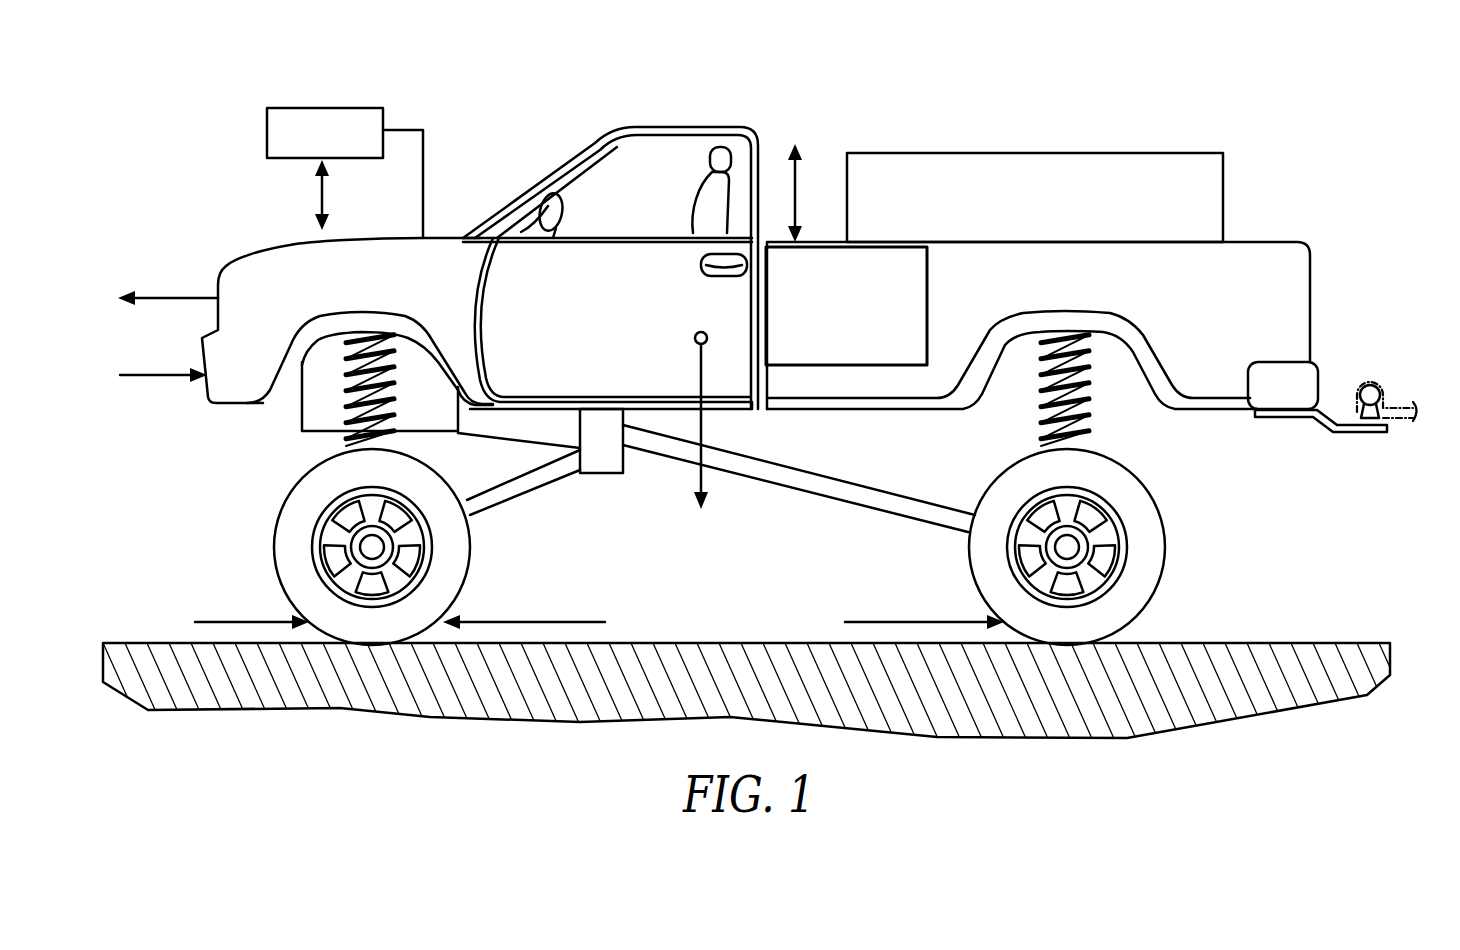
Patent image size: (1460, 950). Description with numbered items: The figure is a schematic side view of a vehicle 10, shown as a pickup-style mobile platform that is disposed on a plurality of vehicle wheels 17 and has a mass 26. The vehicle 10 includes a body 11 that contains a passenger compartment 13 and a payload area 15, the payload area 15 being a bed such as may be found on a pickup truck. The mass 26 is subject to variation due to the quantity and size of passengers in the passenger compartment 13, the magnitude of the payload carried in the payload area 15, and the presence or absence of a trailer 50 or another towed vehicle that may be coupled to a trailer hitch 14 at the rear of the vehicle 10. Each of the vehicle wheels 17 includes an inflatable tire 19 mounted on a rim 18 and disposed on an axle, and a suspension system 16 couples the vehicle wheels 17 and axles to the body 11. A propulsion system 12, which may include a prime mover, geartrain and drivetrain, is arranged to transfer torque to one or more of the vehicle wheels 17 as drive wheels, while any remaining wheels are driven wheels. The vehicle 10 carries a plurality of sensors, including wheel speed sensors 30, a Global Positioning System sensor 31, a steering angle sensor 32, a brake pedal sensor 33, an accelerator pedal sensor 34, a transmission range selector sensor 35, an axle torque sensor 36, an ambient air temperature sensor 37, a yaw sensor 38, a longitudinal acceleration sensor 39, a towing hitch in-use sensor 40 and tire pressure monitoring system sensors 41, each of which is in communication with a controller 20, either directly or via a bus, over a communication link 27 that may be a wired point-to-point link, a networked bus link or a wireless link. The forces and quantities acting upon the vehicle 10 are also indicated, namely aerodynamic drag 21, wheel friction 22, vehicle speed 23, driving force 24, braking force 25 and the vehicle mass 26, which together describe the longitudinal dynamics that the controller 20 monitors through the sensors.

The vehicle 10 is at (1015, 112).
The body 11 is at (520, 155).
The propulsion system 12 is at (296, 438).
The passenger compartment 13 is at (623, 182).
The trailer hitch 14 is at (1375, 384).
The payload area 15 is at (1225, 195).
The suspension system 16 is at (345, 375).
The vehicle wheels 17 is at (1110, 530).
The rim 18 is at (1115, 525).
The inflatable tire 19 is at (1170, 540).
The controller 20 is at (340, 146).
The aerodynamic drag 21 is at (116, 388).
The wheel friction 22 is at (188, 633).
The vehicle speed 23 is at (113, 308).
The driving force 24 is at (636, 633).
The braking force 25 is at (833, 633).
The vehicle mass 26 is at (714, 543).
The link 27 is at (318, 210).
The wheel speed sensors 30 is at (804, 282).
The Global Positioning System (GPS) sensor 31 is at (841, 282).
The steering angle sensor 32 is at (878, 282).
The brake pedal sensor 33 is at (915, 282).
The accelerator pedal sensor 34 is at (804, 320).
The transmission range selector sensor 35 is at (841, 320).
The axle torque sensor 36 is at (878, 320).
The ambient air temperature sensor 37 is at (915, 320).
The yaw sensor 38 is at (804, 358).
The longitudinal acceleration sensor 39 is at (841, 358).
The towing hitch in-use sensor 40 is at (878, 358).
The tire pressure monitoring system (TPMS) sensors 41 is at (915, 358).
The trailer 50 is at (1403, 404).